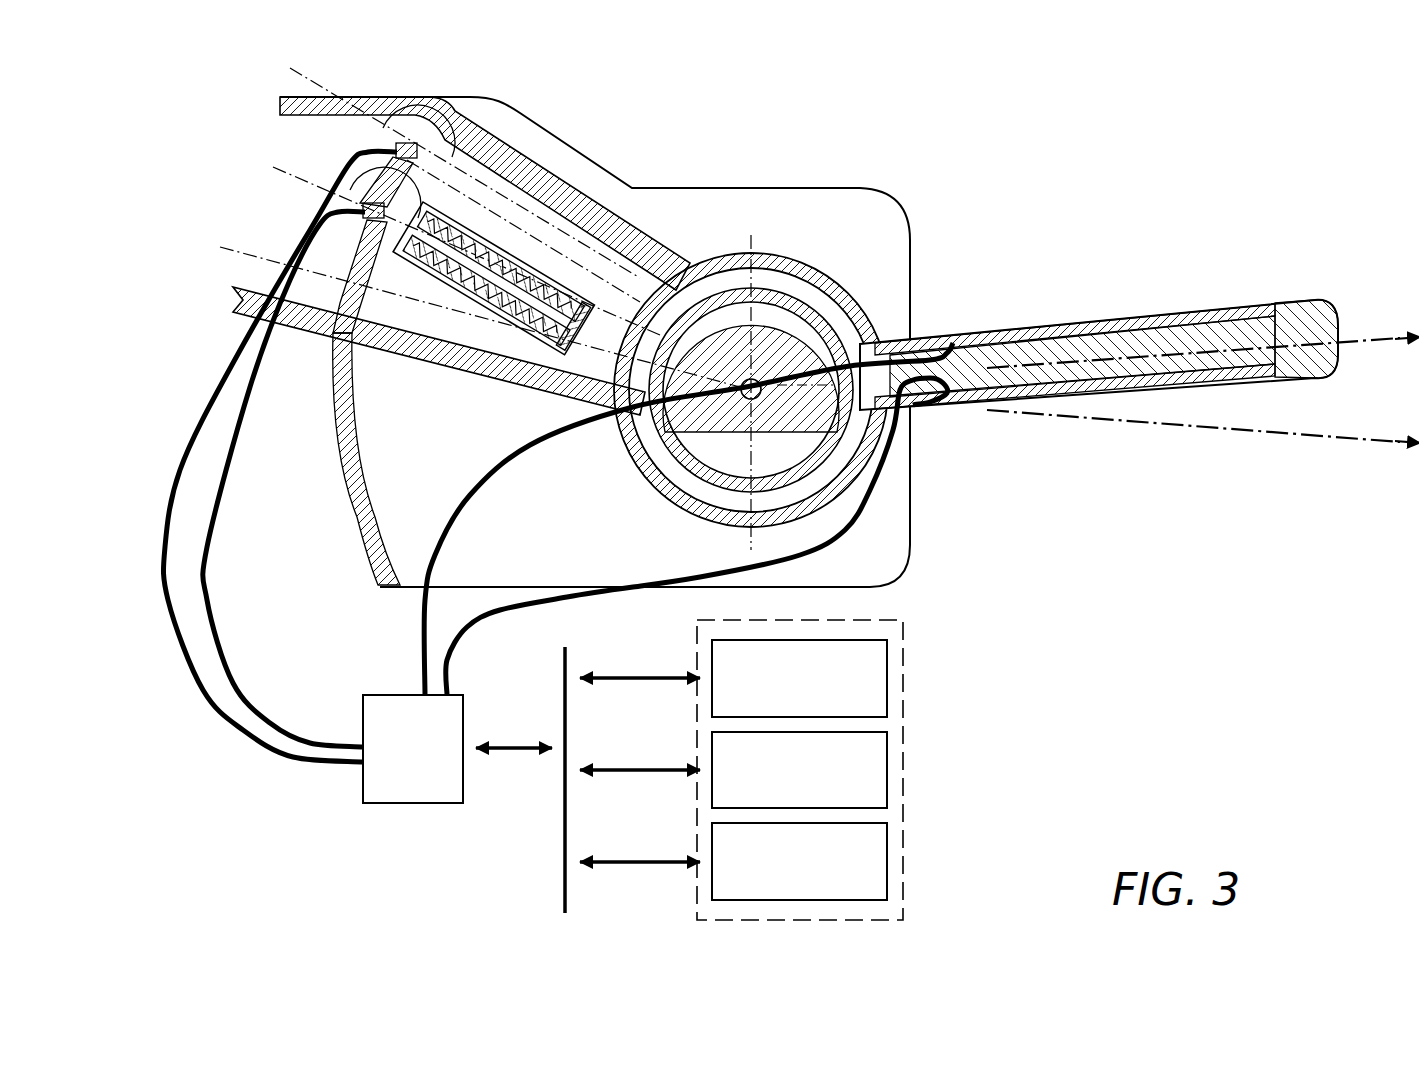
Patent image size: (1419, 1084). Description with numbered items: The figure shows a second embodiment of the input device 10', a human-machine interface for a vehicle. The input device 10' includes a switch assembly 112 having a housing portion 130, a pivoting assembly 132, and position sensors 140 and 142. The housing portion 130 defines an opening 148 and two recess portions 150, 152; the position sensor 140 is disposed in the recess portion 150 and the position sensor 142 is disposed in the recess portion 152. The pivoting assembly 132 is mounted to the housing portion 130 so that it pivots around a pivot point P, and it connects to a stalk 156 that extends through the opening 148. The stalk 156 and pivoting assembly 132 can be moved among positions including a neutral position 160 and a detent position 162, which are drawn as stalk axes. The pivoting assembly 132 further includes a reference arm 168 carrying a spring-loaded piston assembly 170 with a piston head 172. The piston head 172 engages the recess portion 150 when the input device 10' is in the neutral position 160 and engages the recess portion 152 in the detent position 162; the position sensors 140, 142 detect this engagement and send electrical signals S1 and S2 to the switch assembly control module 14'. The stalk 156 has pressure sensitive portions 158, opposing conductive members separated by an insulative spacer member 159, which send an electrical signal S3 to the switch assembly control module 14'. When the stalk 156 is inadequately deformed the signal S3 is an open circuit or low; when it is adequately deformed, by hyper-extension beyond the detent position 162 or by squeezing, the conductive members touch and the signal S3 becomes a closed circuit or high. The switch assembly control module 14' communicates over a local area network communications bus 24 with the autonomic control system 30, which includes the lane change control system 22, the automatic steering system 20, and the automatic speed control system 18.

The input device 10' is at (1072, 136).
The switch assembly 112 is at (907, 212).
The housing portion 130 is at (787, 253).
The pivoting assembly 132 is at (682, 473).
The opening 148 is at (877, 330).
The recess portion 150 is at (456, 140).
The recess portion 152 is at (375, 185).
The position sensor 140 is at (398, 148).
The position sensor 142 is at (362, 207).
The piston head 172 is at (393, 247).
The spring-loaded piston assembly 170 is at (470, 215).
The reference arm 168 is at (510, 312).
The stalk 156 is at (1170, 357).
The pressure sensitive portions 158 is at (1193, 337).
The insulative spacer member 159 is at (1200, 330).
The detent position 162 is at (1355, 338).
The neutral position 160 is at (1335, 437).
The pivot point P is at (748, 380).
The electrical signal S1 is at (165, 550).
The electrical signal S2 is at (205, 590).
The electrical signal S3 is at (420, 648).
The switch assembly control module 14' is at (425, 721).
The local area network communications bus 24 is at (565, 825).
The autonomic control system 30 is at (903, 660).
The lane change control system 22 is at (887, 676).
The automatic steering system 20 is at (887, 767).
The automatic speed control system 18 is at (887, 860).